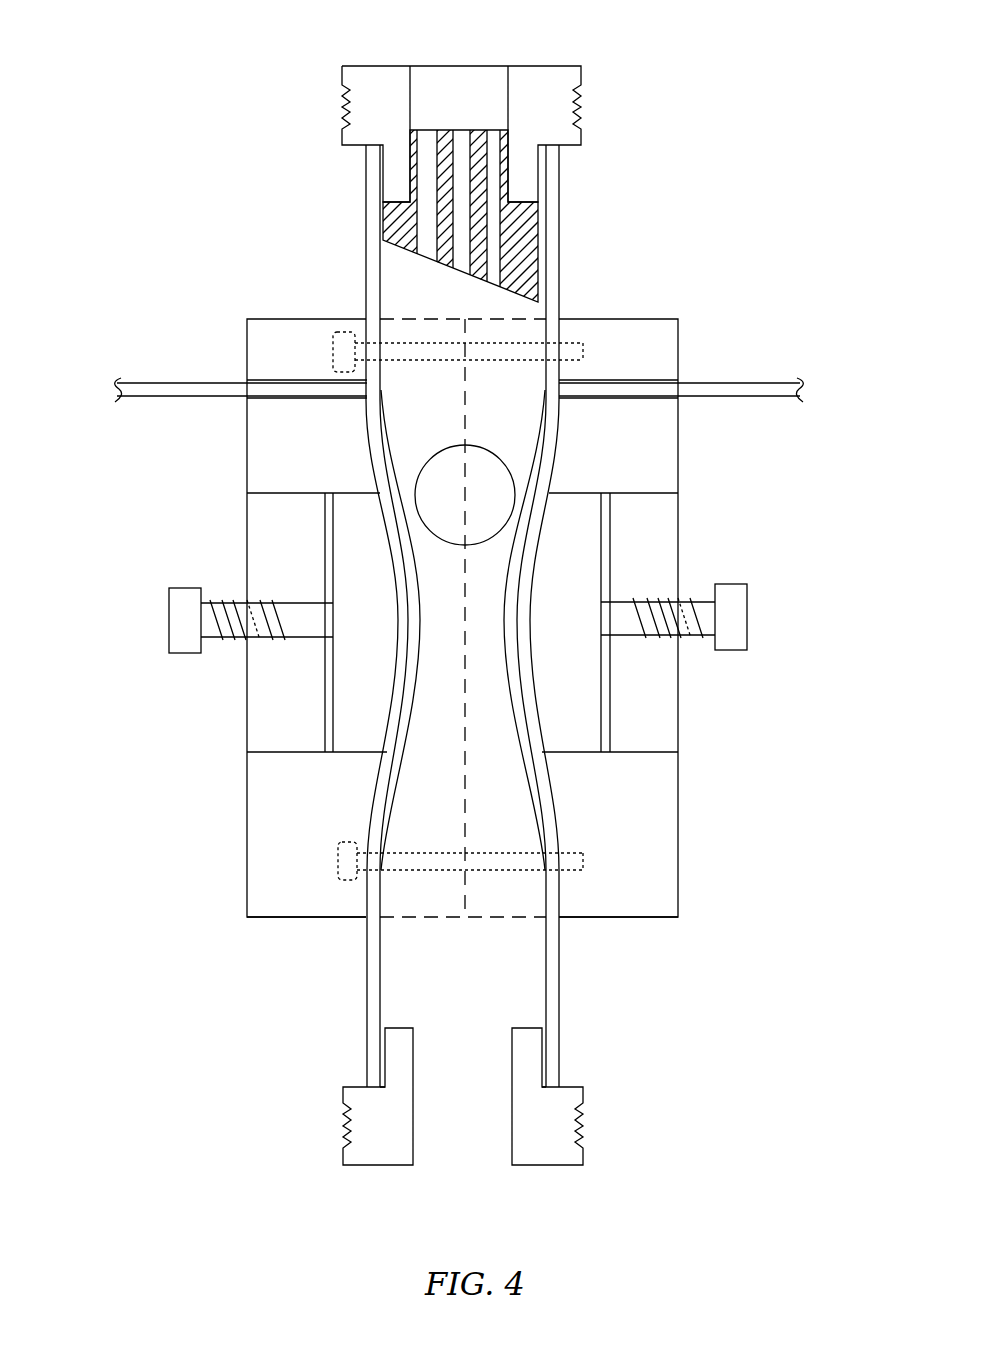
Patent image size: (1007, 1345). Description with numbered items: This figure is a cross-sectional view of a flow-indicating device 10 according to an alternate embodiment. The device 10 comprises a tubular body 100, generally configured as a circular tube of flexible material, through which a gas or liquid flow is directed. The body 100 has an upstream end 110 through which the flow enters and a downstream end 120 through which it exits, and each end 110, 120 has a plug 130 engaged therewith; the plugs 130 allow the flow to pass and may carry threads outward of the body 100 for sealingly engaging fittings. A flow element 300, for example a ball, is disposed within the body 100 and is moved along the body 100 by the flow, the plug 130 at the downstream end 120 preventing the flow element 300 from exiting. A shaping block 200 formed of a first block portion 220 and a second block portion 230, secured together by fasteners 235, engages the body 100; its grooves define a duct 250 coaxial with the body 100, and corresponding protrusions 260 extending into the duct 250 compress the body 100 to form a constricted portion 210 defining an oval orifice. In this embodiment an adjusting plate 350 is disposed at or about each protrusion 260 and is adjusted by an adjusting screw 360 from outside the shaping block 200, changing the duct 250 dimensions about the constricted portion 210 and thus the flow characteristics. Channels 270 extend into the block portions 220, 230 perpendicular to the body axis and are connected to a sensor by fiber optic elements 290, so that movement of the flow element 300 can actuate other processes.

The flow-indicating device 10 is at (744, 231).
The tubular body 100 is at (570, 967).
The upstream end 110 is at (569, 1079).
The downstream end 120 is at (566, 158).
The plug 130 is at (545, 80).
The shaping block 200 is at (697, 806).
The constricted portion 210 is at (524, 629).
The first block portion 220 is at (297, 890).
The second block portion 230 is at (645, 880).
The fasteners 235 is at (583, 343).
The duct 250 is at (569, 315).
The protrusions 260 is at (393, 628).
The channels 270 is at (282, 378).
The fiber optic elements 290 is at (765, 385).
The flow element 300 is at (487, 490).
The adjusting plate 350 is at (370, 568).
The adjusting screw 360 is at (185, 617).